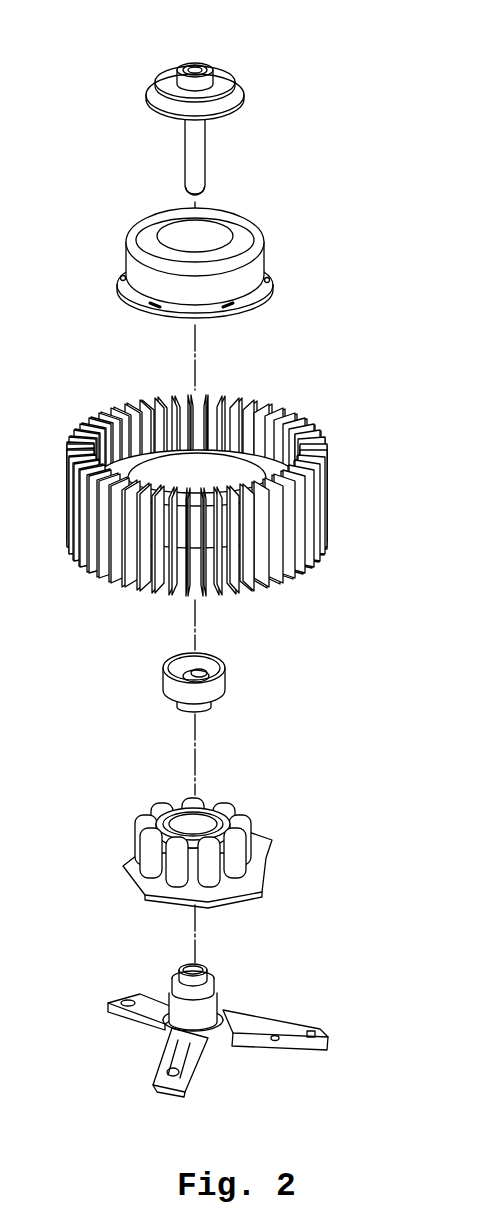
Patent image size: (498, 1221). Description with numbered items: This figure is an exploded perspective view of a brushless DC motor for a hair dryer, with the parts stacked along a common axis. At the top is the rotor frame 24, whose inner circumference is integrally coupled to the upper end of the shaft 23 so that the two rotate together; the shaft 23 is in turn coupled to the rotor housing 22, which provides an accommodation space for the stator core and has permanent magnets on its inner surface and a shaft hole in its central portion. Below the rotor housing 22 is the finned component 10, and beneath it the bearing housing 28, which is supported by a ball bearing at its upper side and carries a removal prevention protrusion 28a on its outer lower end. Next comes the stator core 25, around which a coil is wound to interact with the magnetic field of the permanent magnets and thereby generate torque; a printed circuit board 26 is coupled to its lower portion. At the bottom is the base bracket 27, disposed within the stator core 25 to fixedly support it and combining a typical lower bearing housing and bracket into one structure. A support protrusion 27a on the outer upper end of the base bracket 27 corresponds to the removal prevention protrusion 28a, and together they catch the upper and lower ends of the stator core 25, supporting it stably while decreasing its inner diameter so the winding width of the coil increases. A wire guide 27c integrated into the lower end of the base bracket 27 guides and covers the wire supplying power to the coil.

The stator heat-dissipating fin unit 10 is at (317, 453).
The rotor housing 22 is at (212, 236).
The shaft 23 is at (192, 148).
The rotor frame 24 is at (167, 80).
The stator core 25 is at (247, 838).
The printed circuit board 26 is at (140, 877).
The base bracket 27 is at (238, 1018).
The support protrusion 27a is at (213, 978).
The wire guide 27c is at (322, 1033).
The bearing housing 28 is at (180, 693).
The removal prevention protrusion 28a is at (210, 707).